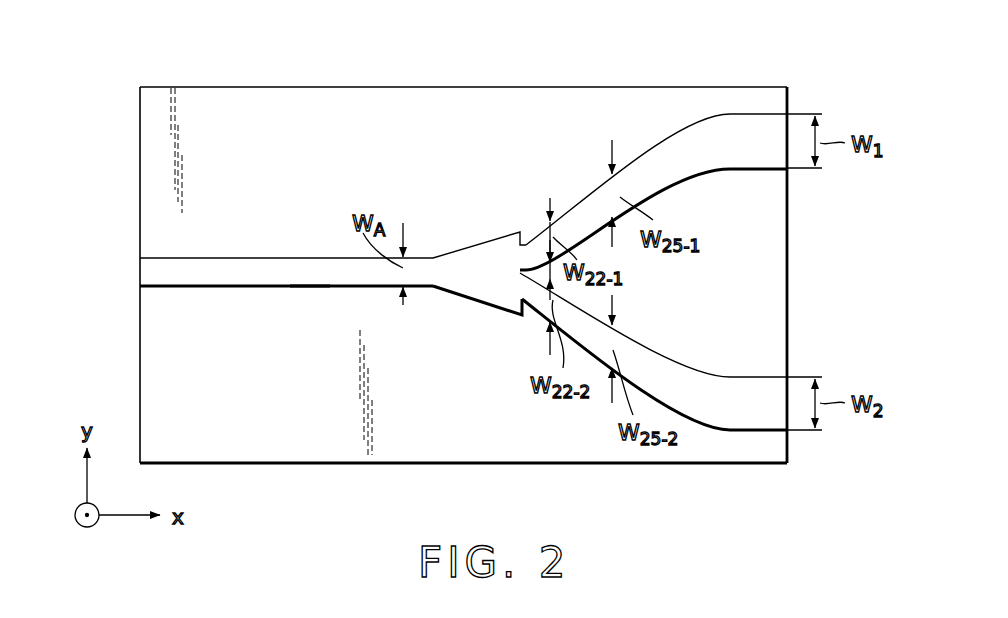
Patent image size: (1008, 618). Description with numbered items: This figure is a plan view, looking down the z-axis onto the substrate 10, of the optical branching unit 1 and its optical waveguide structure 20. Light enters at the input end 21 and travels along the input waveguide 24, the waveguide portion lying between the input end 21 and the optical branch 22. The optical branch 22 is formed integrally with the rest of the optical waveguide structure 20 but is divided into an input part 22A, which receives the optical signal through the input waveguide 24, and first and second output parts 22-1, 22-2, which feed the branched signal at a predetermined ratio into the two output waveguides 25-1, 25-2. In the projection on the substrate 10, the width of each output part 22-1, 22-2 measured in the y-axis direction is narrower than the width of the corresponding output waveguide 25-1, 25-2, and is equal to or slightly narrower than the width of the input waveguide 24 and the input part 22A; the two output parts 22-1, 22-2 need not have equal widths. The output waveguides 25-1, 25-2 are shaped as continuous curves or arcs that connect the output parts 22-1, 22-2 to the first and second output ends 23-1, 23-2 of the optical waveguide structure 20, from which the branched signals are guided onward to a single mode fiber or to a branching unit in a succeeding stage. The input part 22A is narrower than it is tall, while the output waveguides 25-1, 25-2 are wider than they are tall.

The optical waveguide device 1 is at (713, 83).
The substrate 10 is at (253, 456).
The optical waveguide structure 20 is at (221, 255).
The input end 21 is at (140, 264).
The optical branch 22 is at (440, 222).
The input part 22A is at (421, 270).
The first output part 22-1 is at (522, 254).
The second output part 22-2 is at (527, 314).
The first output end 23-1 is at (787, 133).
The second output end 23-2 is at (788, 398).
The input waveguide 24 is at (306, 288).
The first output waveguide 25-1 is at (650, 159).
The second output waveguide 25-2 is at (660, 362).